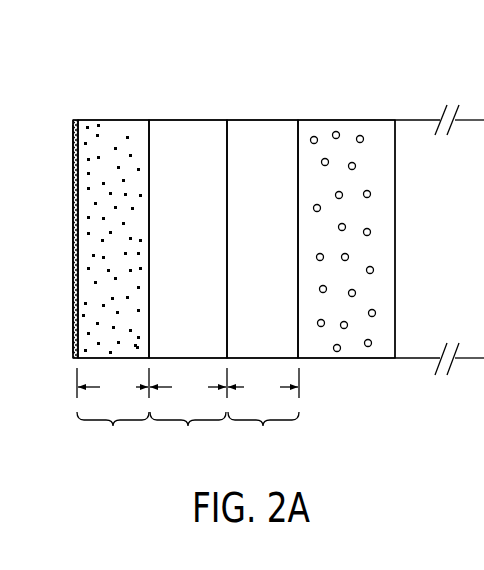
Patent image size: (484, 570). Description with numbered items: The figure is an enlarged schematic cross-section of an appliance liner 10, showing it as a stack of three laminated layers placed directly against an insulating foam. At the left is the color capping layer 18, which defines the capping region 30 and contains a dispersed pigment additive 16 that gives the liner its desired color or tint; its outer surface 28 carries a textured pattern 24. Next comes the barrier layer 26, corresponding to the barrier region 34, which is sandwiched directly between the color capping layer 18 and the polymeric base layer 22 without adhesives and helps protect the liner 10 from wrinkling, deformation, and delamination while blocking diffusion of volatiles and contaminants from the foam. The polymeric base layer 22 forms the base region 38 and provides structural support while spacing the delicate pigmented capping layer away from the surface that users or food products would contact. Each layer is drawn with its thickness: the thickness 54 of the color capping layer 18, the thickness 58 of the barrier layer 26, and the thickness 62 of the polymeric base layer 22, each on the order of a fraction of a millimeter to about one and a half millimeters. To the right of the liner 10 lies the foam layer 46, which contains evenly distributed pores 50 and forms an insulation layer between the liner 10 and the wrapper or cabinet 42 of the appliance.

The liner 10 is at (295, 68).
The pigment additive 16 is at (130, 155).
The color capping layer 18 is at (99, 124).
The polymeric base layer 22 is at (263, 132).
The textured pattern 24 is at (72, 149).
The barrier layer 26 is at (196, 133).
The outer surface 28 is at (51, 275).
The capping region 30 is at (113, 433).
The barrier region 34 is at (188, 433).
The base region 38 is at (263, 433).
The cabinet 42 is at (428, 244).
The foam layer 46 is at (375, 132).
The pores 50 is at (340, 352).
The thickness of the color capping layer 54 is at (113, 384).
The thickness of the barrier layer 58 is at (188, 384).
The thickness of the polymeric base layer 62 is at (263, 384).